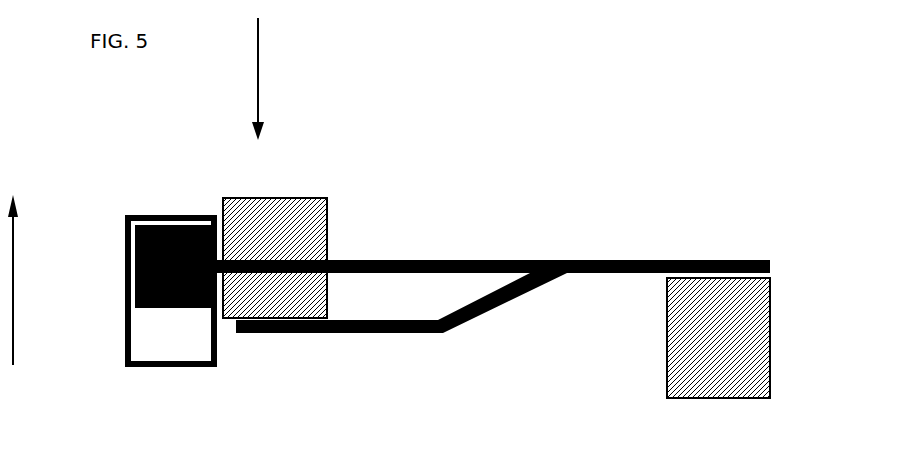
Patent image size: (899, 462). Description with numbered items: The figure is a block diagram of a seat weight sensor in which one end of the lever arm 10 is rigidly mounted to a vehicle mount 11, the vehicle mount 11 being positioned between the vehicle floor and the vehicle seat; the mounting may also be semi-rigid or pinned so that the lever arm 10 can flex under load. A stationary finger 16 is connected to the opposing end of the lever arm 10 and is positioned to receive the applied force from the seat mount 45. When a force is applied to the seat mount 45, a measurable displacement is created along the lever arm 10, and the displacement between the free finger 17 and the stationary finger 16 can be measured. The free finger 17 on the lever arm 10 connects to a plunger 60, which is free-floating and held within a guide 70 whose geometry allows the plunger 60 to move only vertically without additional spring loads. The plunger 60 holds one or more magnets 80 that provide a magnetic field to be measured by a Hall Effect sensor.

The lever arm 10 is at (482, 241).
The vehicle mount 11 is at (762, 333).
The stationary finger 16 is at (332, 333).
The free finger 17 is at (438, 260).
The seat mount 45 is at (245, 198).
The plunger 60 is at (191, 225).
The guide 70 is at (160, 357).
The magnets 80 is at (135, 268).